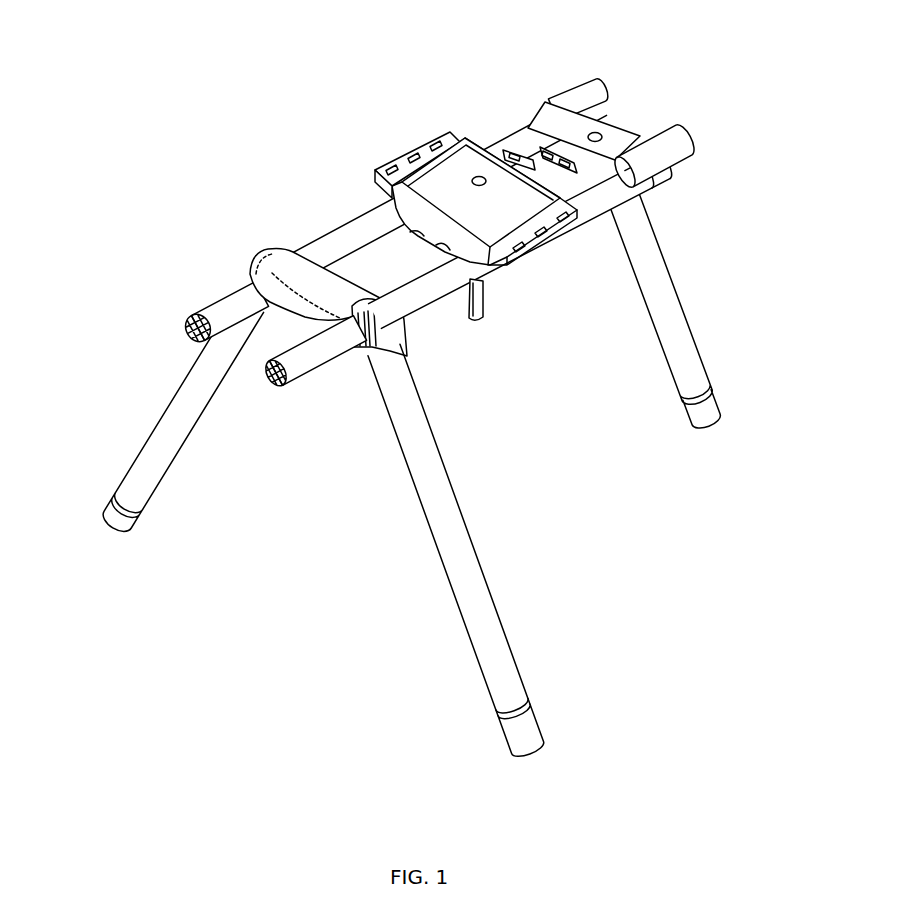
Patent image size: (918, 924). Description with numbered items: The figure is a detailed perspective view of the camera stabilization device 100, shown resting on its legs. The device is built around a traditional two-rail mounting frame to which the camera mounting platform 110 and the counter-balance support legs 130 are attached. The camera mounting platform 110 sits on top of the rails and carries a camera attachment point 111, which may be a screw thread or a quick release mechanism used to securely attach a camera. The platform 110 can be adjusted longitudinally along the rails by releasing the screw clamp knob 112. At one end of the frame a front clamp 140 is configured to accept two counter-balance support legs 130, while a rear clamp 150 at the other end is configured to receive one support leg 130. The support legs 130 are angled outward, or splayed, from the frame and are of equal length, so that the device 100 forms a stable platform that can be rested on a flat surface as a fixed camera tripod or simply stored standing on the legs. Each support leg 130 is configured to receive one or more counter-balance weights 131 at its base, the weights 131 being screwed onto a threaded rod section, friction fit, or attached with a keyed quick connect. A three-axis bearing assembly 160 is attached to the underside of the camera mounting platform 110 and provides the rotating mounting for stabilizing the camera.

The camera stabilization device 100 is at (452, 383).
The camera mounting platform 110 is at (428, 138).
The camera attachment point 111 is at (480, 175).
The screw clamp knob 112 is at (527, 160).
The counter-balance support leg 130 is at (546, 550).
The counter-balance weight 131 is at (544, 722).
The front clamp 140 is at (297, 293).
The rear clamp 150 is at (668, 178).
The three-axis bearing assembly 160 is at (485, 322).